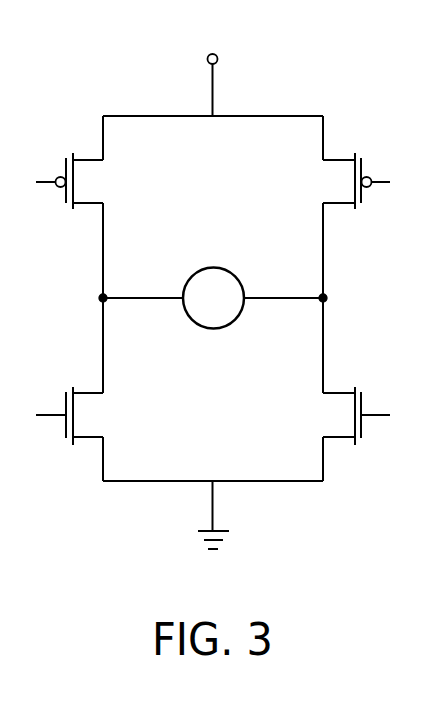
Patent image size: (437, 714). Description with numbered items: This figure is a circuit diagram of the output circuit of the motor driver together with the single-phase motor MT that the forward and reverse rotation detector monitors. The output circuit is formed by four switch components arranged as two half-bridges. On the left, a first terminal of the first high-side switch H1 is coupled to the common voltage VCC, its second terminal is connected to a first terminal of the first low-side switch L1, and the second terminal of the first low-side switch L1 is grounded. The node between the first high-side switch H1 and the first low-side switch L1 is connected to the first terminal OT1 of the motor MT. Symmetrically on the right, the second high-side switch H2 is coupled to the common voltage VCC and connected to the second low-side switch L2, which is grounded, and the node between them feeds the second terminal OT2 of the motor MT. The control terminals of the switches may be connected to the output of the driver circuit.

The common voltage VCC is at (212, 67).
The first high-side switch H1 is at (60, 173).
The second high-side switch H2 is at (366, 173).
The first low-side switch L1 is at (60, 409).
The second low-side switch L2 is at (365, 409).
The first terminal of the motor OT1 is at (111, 297).
The second terminal of the motor OT2 is at (317, 297).
The motor MT is at (215, 268).